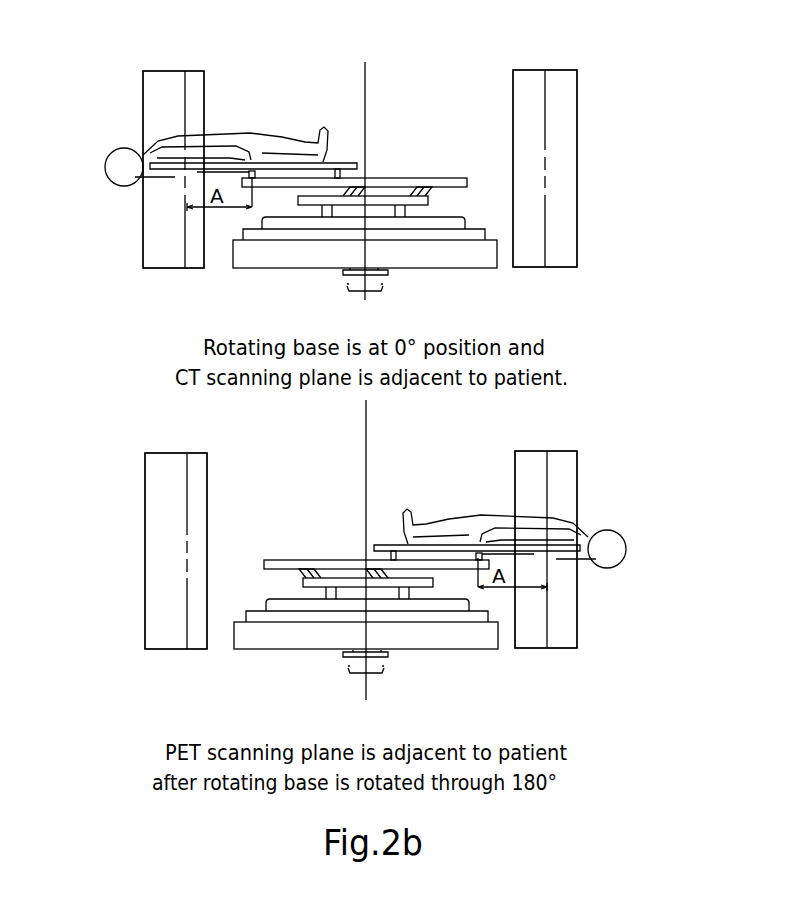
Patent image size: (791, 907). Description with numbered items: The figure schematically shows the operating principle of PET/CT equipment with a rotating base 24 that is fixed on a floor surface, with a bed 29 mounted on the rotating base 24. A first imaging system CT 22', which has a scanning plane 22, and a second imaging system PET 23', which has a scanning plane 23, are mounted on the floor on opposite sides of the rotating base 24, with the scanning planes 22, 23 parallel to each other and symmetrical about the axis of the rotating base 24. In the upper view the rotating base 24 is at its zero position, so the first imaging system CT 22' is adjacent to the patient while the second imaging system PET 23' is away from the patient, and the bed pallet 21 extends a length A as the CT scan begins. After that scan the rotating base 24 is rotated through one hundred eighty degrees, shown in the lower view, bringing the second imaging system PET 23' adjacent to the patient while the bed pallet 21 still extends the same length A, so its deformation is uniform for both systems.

The bed pallet 21 is at (113, 190).
The scanning plane 22 is at (134, 392).
The first imaging system CT 22' is at (129, 328).
The scanning plane 23 is at (579, 389).
The second imaging system PET 23' is at (590, 349).
The rotating base 24 is at (472, 268).
The bed 29 is at (447, 175).